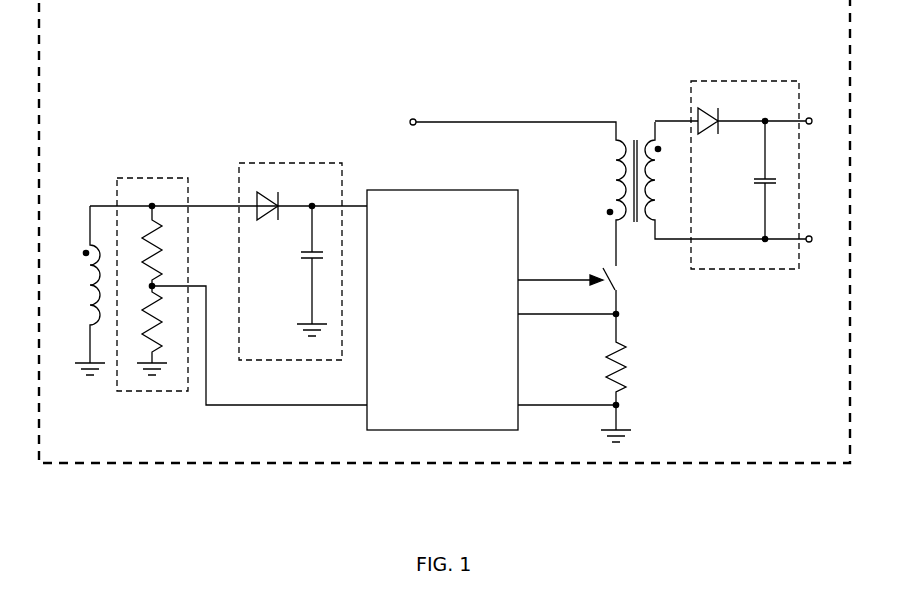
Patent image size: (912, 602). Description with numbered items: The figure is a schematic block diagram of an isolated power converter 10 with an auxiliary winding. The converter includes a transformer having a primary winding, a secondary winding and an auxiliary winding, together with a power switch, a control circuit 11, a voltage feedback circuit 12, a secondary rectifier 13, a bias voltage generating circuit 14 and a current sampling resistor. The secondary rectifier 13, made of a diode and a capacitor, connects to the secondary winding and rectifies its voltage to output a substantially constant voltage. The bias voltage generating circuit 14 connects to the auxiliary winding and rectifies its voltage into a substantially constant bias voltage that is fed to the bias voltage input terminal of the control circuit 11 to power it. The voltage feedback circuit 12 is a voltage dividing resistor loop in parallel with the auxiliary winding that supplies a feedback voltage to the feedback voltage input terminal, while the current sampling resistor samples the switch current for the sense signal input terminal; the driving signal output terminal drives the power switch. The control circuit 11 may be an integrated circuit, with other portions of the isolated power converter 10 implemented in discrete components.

The isolated power converter 10 is at (98, 50).
The control circuit 11 is at (455, 190).
The voltage feedback circuit 12 is at (152, 178).
The secondary rectifier 13 is at (738, 81).
The bias voltage generating circuit 14 is at (292, 163).